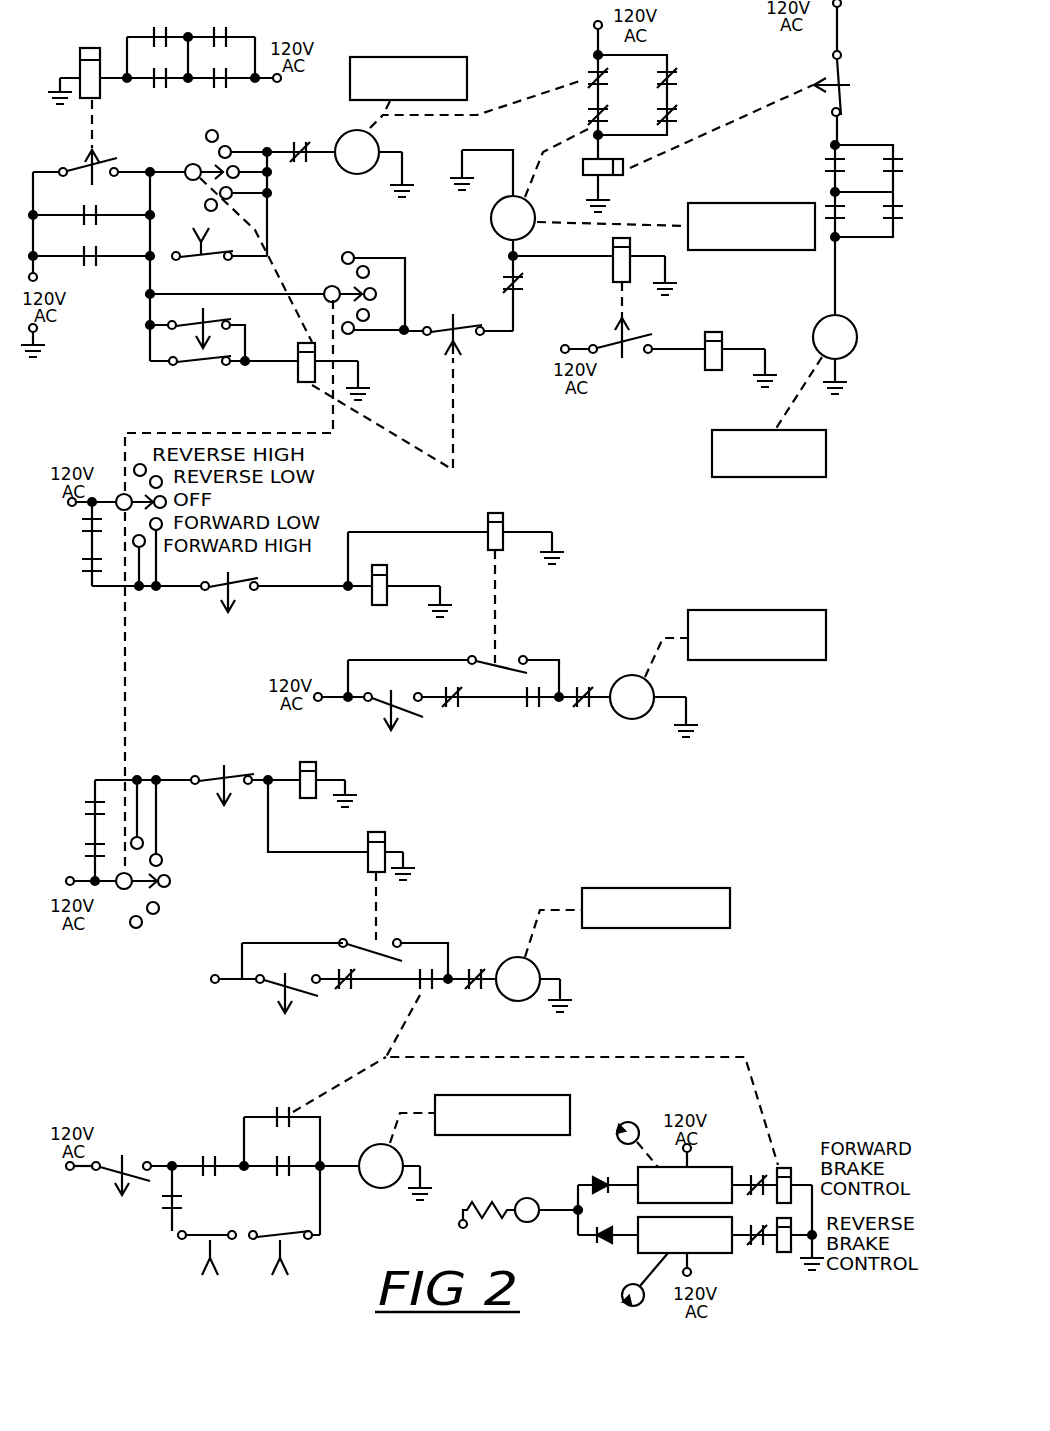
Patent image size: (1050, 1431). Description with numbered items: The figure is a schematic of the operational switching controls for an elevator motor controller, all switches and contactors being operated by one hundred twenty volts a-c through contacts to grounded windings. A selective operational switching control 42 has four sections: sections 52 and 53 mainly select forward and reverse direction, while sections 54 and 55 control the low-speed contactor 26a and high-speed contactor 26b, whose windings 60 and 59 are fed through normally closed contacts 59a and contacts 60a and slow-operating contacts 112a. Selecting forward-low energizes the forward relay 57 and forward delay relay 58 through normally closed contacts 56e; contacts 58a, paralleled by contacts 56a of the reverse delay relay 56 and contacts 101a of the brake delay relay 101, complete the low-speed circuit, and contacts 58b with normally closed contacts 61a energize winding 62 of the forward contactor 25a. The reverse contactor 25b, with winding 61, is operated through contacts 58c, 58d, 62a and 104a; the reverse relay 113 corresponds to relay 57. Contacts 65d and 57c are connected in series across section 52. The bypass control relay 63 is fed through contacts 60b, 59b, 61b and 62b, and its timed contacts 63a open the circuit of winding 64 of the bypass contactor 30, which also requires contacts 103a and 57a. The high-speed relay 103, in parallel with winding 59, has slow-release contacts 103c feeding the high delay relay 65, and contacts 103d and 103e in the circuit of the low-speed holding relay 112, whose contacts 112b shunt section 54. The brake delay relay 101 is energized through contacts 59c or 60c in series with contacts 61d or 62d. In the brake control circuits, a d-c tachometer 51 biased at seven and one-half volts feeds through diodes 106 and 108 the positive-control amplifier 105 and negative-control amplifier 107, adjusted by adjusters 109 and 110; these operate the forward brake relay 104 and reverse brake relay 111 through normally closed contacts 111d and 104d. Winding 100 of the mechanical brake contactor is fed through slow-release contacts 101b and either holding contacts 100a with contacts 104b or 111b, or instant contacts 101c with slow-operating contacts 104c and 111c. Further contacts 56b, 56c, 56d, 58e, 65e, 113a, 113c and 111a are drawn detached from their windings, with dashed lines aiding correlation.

The brake delay relay 101 is at (82, 58).
The contacts 62d is at (165, 26).
The contacts 60c is at (826, 174).
The contacts 61d is at (163, 90).
The contacts 59c is at (222, 90).
The contacts of brake delay relay 101a is at (103, 156).
The switch section 54 is at (192, 160).
The normally closed contacts 59a is at (299, 138).
The winding of low-speed contactor 60 is at (349, 176).
The low-speed contactor 26a is at (428, 55).
The contacts of forward delay relay 58a is at (91, 206).
The contacts of reverse delay relay 56a is at (91, 248).
The contacts of low-speed holding relay 112b is at (211, 257).
The switch section 55 is at (336, 275).
The slow operating contacts 103e is at (157, 322).
The fast operating contacts 103d is at (188, 368).
The low-speed holding relay 112 is at (295, 382).
The slow-operating contacts 112a is at (436, 338).
The contacts 60a is at (508, 283).
The winding of high-speed contactor 59 is at (496, 229).
The high-speed relay 103 is at (613, 260).
The slow-release contacts 103c is at (601, 343).
The high delay relay 65 is at (706, 374).
The contacts 60b is at (580, 71).
The contacts 59b is at (579, 109).
The contacts 61b is at (685, 71).
The contacts 62b is at (685, 110).
The bypass control relay 63 is at (582, 173).
The high-speed contactor 26b is at (784, 200).
The timed contacts 63a is at (842, 80).
The contacts of high-speed relay 103a is at (898, 156).
The contacts of forward relay 57a is at (827, 244).
The contact 113a is at (898, 228).
The winding of bypass contactor 64 is at (852, 322).
The bypass contactor 30 is at (733, 480).
The selective operational switching control 42 is at (180, 430).
The switch section 52 is at (117, 494).
The contacts of high delay relay 65d is at (80, 524).
The holding contacts 57c is at (80, 564).
The normally closed contacts 56e is at (250, 592).
The forward relay 57 is at (387, 602).
The forward delay relay 58 is at (503, 526).
The contacts of forward delay relay 58b is at (494, 662).
The switch 56d is at (376, 708).
The contact 56c is at (453, 712).
The contact 111a is at (534, 712).
The normally closed contacts 61a is at (598, 686).
The winding of forward contactor 62 is at (634, 726).
The forward contactor 25a is at (783, 608).
The switch 58e is at (228, 772).
The reverse relay 113 is at (316, 774).
The reverse delay relay 56 is at (385, 836).
The contact 65e is at (84, 810).
The contact 113c is at (86, 852).
The switch section 53 is at (124, 890).
The switch 56b is at (355, 942).
The contacts of forward delay relay 58d is at (270, 990).
The contacts of forward delay relay 58c is at (344, 990).
The contacts of forward brake relay 104a is at (429, 990).
The contacts 62a is at (480, 966).
The winding of reverse contactor 61 is at (536, 1012).
The reverse contactor 25b is at (663, 888).
The contacts of forward brake relay 104b is at (276, 1113).
The holding contacts 100a is at (222, 1148).
The contacts of reverse brake relay 111b is at (276, 1178).
The slow-release contacts 101b is at (102, 1182).
The instant operating contacts 101c is at (163, 1212).
The slow-operating contacts 104c is at (200, 1251).
The slow-operating contacts 111c is at (295, 1248).
The winding of mechanical brake contactor 100 is at (389, 1197).
The adjuster 109 is at (632, 1122).
The d-c tachometer 51 is at (528, 1233).
The diode 106 is at (600, 1174).
The diode 108 is at (598, 1248).
The positive-control amplifying circuit 105 is at (706, 1166).
The negative-control amplifier 107 is at (702, 1254).
The adjuster 110 is at (621, 1294).
The normally closed contacts 111d is at (752, 1194).
The forward brake relay 104 is at (782, 1165).
The normally closed contacts 104d is at (756, 1266).
The reverse brake relay 111 is at (784, 1252).